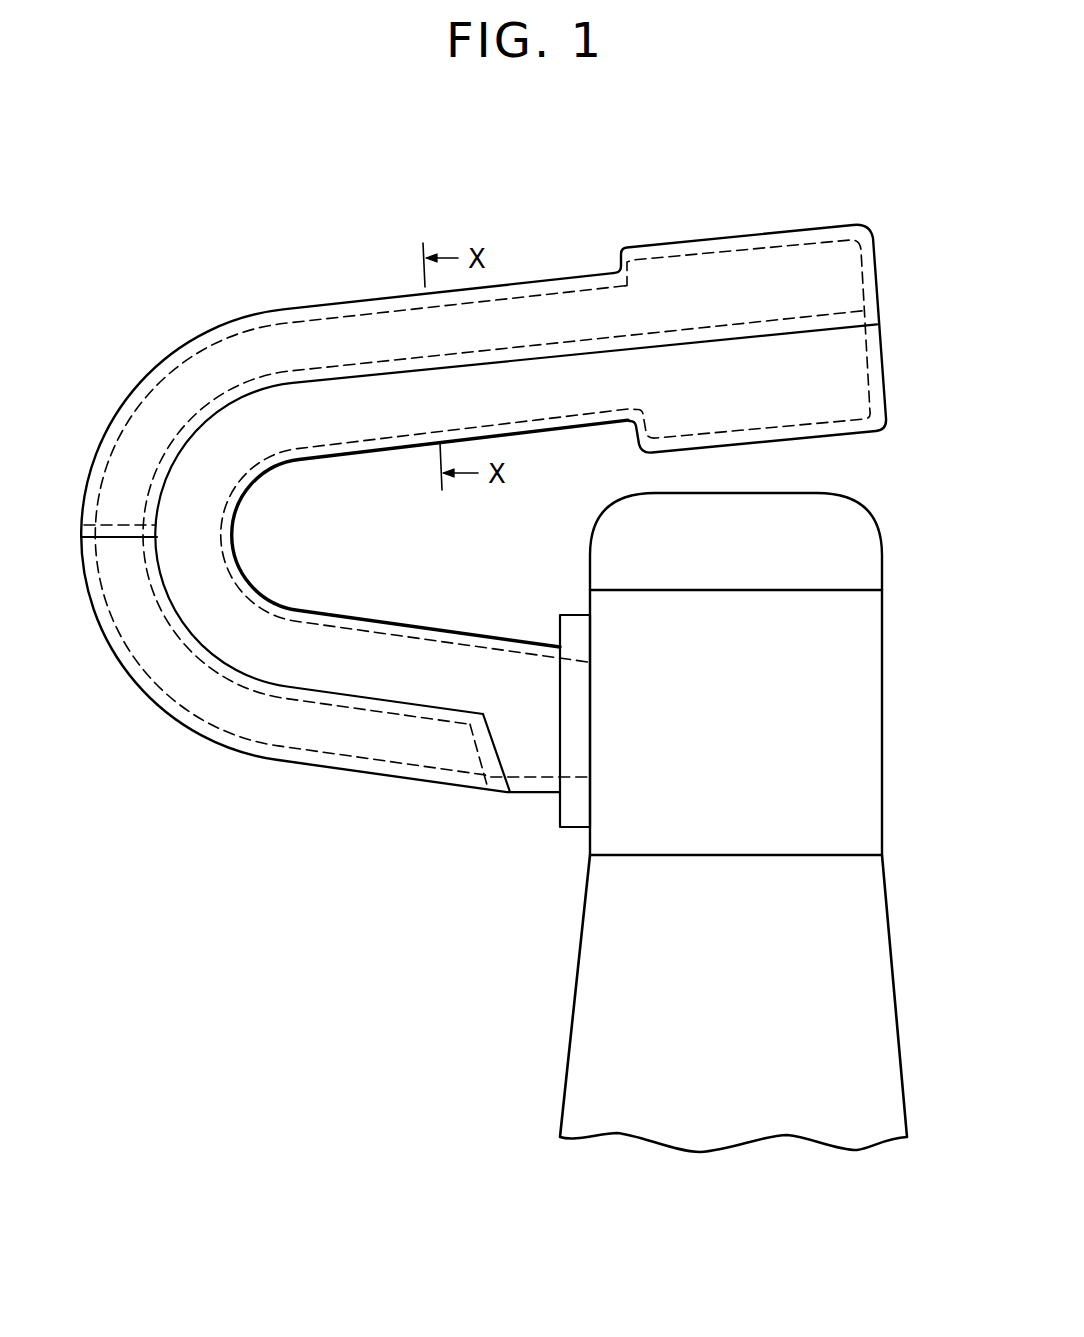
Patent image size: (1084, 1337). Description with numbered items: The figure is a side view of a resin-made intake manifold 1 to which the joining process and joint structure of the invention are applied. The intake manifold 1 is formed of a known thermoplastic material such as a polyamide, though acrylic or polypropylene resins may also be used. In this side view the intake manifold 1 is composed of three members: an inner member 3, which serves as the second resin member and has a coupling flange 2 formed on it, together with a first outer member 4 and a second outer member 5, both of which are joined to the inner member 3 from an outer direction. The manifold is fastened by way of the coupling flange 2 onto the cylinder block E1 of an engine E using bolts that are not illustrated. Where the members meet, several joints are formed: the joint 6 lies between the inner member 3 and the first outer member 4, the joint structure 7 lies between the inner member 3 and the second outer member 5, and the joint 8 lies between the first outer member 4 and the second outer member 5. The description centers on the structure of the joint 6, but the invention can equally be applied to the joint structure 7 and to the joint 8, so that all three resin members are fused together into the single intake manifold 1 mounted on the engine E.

The intake manifold 1 is at (268, 300).
The coupling flange 2 is at (568, 632).
The inner member 3 is at (267, 597).
The first outer member 4 is at (550, 279).
The second outer member 5 is at (229, 749).
The joint 6 is at (742, 337).
The joint structure 7 is at (437, 710).
The joint 8 is at (123, 538).
The engine E is at (892, 552).
The cylinder block E1 is at (865, 682).